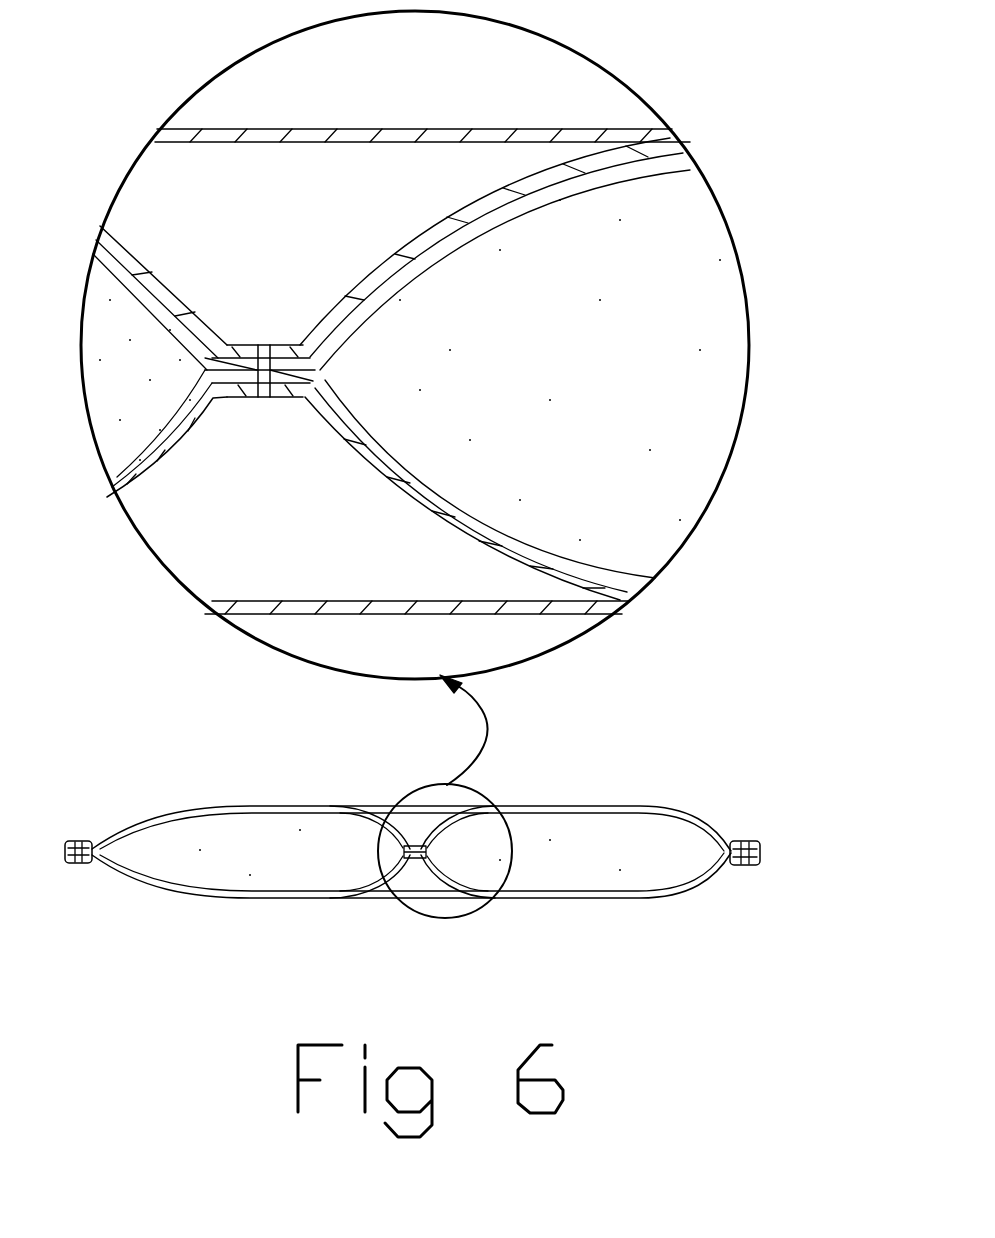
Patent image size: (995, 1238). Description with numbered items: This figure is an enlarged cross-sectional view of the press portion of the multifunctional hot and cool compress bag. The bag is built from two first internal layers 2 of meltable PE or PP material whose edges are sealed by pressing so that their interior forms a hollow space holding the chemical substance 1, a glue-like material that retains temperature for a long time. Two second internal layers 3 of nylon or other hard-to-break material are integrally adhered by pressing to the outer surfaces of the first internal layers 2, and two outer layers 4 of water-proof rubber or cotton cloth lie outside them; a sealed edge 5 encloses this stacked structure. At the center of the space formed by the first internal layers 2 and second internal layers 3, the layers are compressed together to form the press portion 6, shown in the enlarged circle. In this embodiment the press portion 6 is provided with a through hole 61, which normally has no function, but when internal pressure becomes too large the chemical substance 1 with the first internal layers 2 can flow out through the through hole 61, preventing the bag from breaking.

The chemical substance 1 is at (95, 315).
The first internal layers 2 is at (100, 247).
The second internal layers 3 is at (100, 228).
The outer layers 4 is at (303, 133).
The sealed edge 5 is at (733, 843).
The press portion 6 is at (272, 283).
The through hole 61 is at (265, 352).